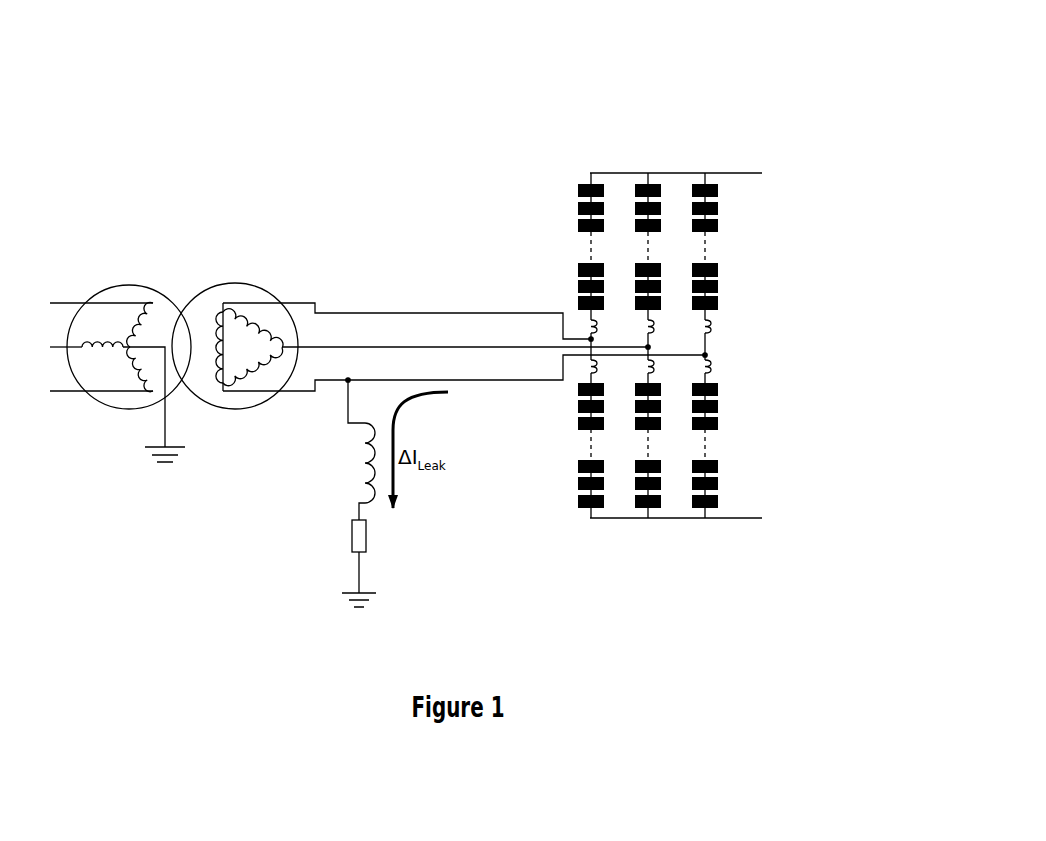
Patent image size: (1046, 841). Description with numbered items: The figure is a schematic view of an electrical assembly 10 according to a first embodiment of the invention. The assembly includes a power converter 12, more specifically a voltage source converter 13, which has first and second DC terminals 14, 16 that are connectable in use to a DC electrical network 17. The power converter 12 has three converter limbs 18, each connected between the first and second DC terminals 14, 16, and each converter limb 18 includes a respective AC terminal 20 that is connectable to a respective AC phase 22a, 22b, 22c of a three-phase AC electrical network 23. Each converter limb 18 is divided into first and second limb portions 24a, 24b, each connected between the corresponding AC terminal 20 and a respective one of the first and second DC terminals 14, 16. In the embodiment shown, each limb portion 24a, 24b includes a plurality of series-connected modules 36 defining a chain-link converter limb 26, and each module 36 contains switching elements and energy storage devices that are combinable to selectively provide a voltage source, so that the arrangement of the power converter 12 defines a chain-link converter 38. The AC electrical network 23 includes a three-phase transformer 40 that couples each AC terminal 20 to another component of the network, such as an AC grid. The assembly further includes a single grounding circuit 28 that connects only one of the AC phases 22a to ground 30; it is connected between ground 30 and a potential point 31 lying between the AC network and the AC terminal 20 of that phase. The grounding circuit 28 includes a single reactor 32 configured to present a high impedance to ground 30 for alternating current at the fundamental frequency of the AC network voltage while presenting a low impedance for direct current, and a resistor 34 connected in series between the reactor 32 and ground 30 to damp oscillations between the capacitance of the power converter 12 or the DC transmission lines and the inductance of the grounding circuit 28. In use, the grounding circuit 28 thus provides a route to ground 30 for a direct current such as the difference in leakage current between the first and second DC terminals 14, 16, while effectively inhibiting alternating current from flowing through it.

The electrical assembly 10 is at (103, 75).
The power converter 12 is at (677, 317).
The voltage source converter 13 is at (677, 317).
The first DC terminal 14 is at (657, 173).
The second DC terminal 16 is at (675, 518).
The DC electrical network 17 is at (872, 328).
The converter limb 18 is at (802, 282).
The AC terminal 20 is at (707, 355).
The AC phase 22a is at (497, 380).
The AC phase 22b is at (467, 347).
The AC phase 22c is at (405, 303).
The three-phase AC electrical network 23 is at (296, 273).
The first limb portion 24a is at (698, 213).
The second limb portion 24b is at (766, 436).
The chain-link converter limb 26 is at (779, 307).
The grounding circuit 28 is at (340, 505).
The ground 30 is at (367, 597).
The potential point 31 is at (346, 382).
The reactor 32 is at (363, 452).
The resistor 34 is at (362, 535).
The module 36 is at (712, 183).
The chain-link converter 38 is at (719, 317).
The transformer 40 is at (180, 290).